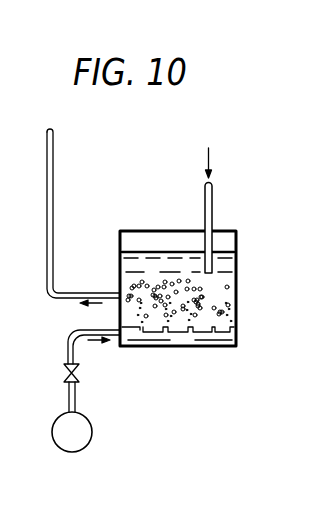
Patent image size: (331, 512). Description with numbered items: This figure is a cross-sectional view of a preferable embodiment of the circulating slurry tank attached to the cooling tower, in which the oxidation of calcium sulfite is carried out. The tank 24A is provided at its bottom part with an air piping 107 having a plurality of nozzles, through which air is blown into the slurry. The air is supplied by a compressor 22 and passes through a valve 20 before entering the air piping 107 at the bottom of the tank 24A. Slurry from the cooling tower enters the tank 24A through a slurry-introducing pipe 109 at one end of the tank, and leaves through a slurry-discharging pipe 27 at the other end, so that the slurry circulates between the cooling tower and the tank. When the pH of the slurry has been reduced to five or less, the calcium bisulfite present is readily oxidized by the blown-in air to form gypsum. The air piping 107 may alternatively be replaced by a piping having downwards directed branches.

The slurry-discharging pipe 27 is at (53, 172).
The slurry-introducing pipe 109 is at (212, 203).
The tank 24A is at (266, 264).
The air piping 107 is at (190, 332).
The valve 20 is at (63, 367).
The compressor 22 is at (92, 427).